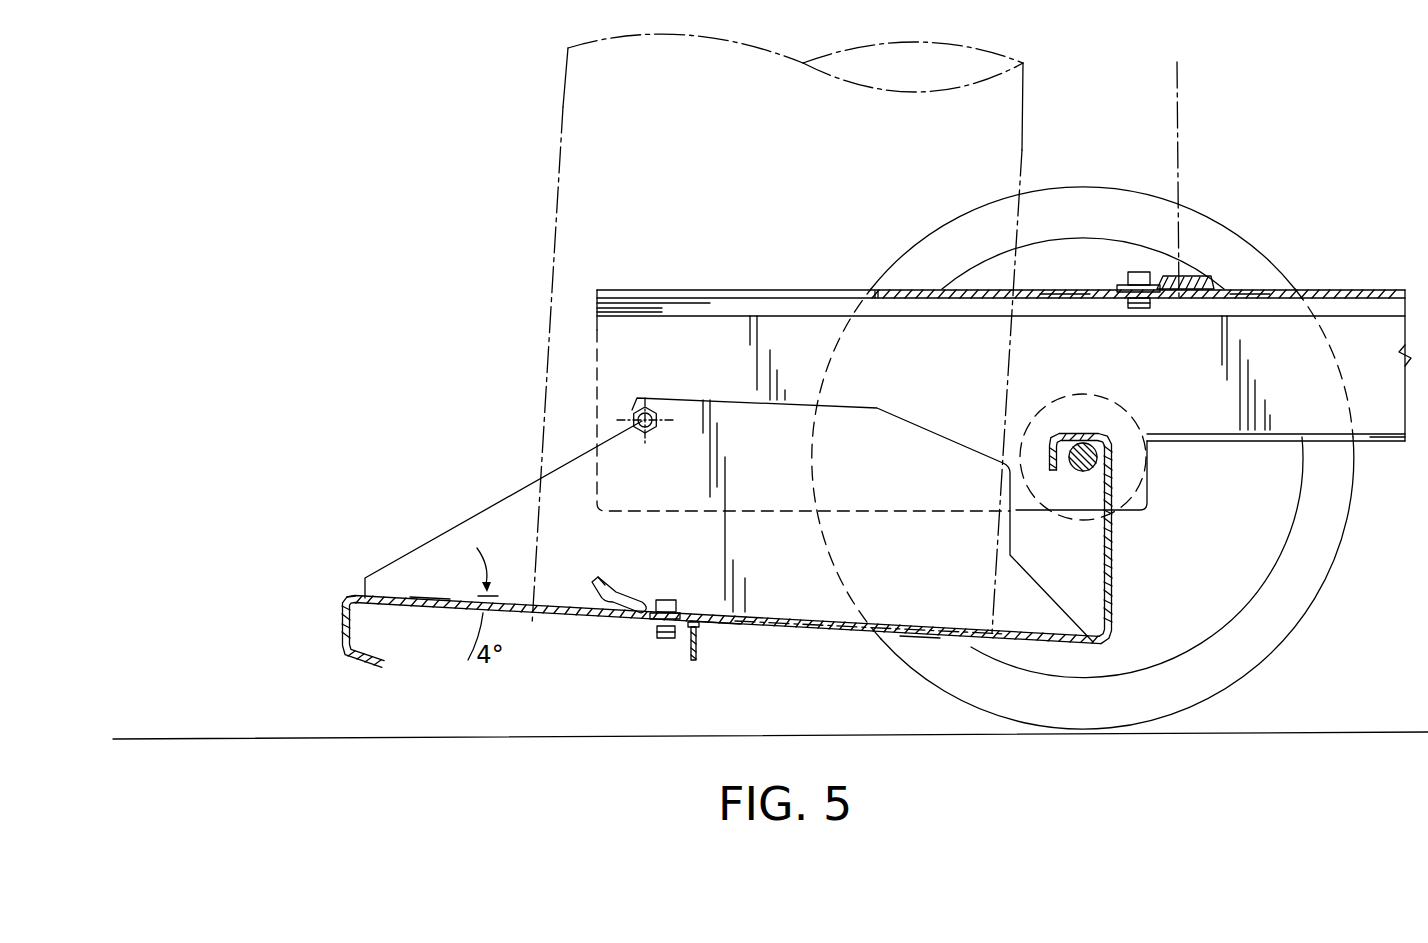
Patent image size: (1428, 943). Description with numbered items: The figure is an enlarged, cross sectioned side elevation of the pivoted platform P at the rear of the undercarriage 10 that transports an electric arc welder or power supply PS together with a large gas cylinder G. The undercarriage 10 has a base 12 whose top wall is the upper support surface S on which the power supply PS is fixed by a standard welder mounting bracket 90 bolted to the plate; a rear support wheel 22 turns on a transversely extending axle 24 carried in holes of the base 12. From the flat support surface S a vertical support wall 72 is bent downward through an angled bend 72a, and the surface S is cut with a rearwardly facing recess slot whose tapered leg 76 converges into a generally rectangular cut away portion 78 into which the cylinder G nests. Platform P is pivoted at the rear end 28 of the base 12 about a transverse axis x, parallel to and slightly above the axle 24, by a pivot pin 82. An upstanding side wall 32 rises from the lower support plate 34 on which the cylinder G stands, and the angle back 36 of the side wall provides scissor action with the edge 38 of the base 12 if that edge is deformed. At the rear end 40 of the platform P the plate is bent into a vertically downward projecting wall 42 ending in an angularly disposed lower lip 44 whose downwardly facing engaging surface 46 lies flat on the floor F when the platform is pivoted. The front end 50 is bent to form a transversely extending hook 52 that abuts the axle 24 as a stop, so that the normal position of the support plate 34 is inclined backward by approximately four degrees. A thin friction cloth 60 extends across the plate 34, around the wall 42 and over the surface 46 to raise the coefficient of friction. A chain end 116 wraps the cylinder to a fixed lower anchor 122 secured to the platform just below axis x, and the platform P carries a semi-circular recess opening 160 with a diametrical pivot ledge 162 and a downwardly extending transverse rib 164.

The undercarriage 10 is at (1391, 460).
The base 12 is at (1357, 286).
The rear support wheel 22 is at (1268, 663).
The axle 24 is at (1097, 460).
The rear end of base 28 is at (725, 330).
The side wall 32 is at (567, 462).
The support plate 34 is at (610, 618).
The angle back 36 is at (1068, 612).
The edge of base 38 is at (1032, 512).
The rear end of platform 40 is at (340, 590).
The downward projecting wall 42 is at (338, 620).
The lower lip 44 is at (376, 665).
The lower engaging surface 46 is at (358, 663).
The front end of platform 50 is at (1082, 660).
The hook 52 is at (1075, 437).
The friction cloth 60 is at (430, 599).
The vertical support wall 72 is at (918, 345).
The angled bend 72a is at (805, 310).
The tapered leg 76 is at (650, 302).
The cut away portion 78 is at (1063, 297).
The pivot pin 82 is at (655, 405).
The welder mounting bracket 90 is at (1172, 275).
The connected chain end 116 is at (632, 596).
The lower anchor 122 is at (668, 604).
The recess opening 160 is at (917, 640).
The pivot ledge 162 is at (704, 624).
The transverse rib 164 is at (695, 661).
The gas cylinder G is at (572, 105).
The power supply PS is at (1177, 88).
The support surface S is at (1250, 294).
The platform P is at (823, 649).
The floor F is at (195, 738).